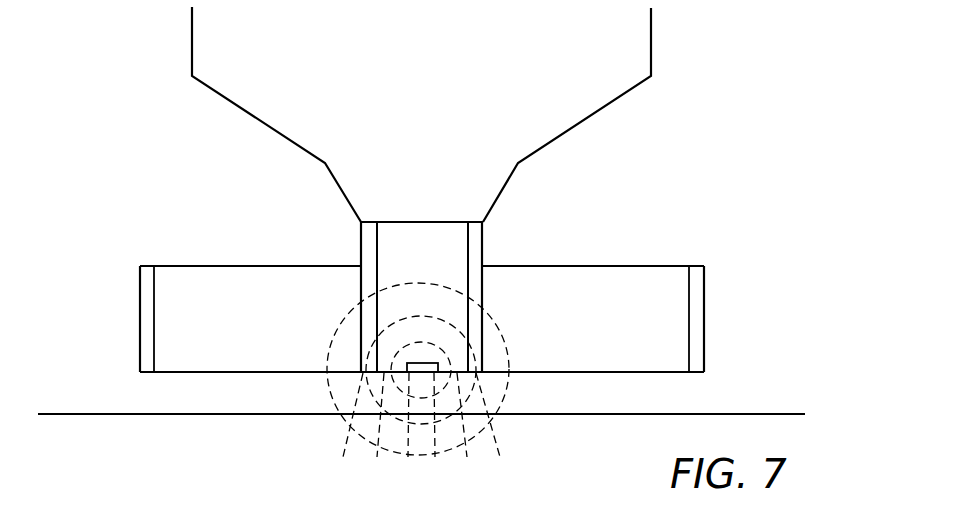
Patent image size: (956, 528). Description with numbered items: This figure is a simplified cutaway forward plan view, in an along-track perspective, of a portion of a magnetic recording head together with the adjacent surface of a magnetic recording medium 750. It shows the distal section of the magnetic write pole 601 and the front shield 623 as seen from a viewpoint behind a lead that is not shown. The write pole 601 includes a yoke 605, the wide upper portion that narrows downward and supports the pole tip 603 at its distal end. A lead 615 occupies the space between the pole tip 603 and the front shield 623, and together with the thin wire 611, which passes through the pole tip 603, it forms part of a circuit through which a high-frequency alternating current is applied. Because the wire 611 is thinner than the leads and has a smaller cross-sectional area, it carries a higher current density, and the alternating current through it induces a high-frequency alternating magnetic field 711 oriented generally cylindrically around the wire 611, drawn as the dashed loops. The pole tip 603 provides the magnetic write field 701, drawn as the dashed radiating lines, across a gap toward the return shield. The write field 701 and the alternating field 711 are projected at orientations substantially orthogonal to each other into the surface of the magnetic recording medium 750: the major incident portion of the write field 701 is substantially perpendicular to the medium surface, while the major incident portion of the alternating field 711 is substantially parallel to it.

The magnetic write pole 601 is at (121, 187).
The pole tip 603 is at (348, 237).
The yoke 605 is at (228, 100).
The wire 611 is at (440, 352).
The lead 615 is at (154, 338).
The front shield 623 is at (128, 290).
The magnetic write field 701 is at (512, 442).
The alternating magnetic field 711 is at (520, 395).
The magnetic recording medium 750 is at (762, 401).